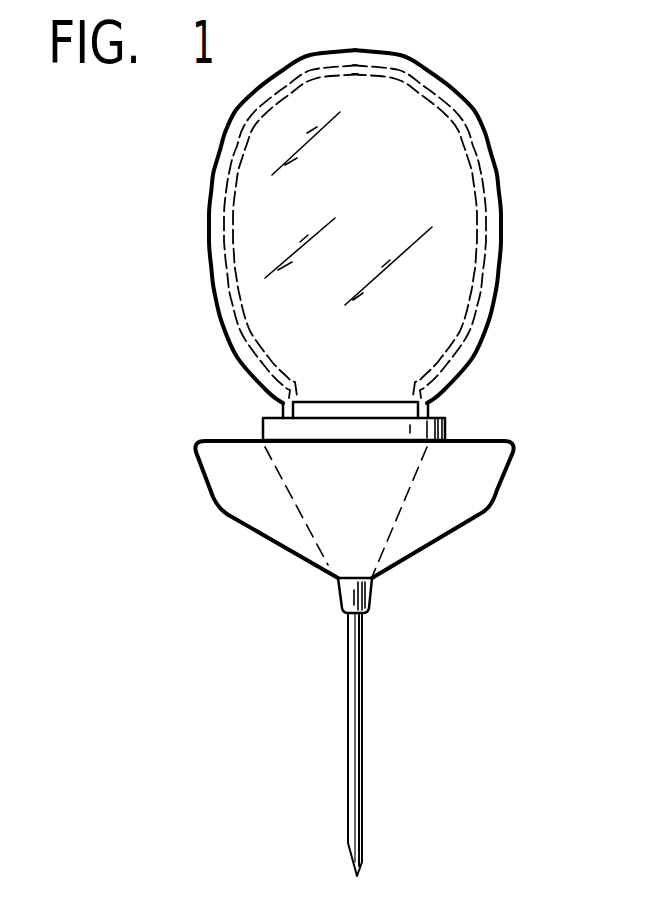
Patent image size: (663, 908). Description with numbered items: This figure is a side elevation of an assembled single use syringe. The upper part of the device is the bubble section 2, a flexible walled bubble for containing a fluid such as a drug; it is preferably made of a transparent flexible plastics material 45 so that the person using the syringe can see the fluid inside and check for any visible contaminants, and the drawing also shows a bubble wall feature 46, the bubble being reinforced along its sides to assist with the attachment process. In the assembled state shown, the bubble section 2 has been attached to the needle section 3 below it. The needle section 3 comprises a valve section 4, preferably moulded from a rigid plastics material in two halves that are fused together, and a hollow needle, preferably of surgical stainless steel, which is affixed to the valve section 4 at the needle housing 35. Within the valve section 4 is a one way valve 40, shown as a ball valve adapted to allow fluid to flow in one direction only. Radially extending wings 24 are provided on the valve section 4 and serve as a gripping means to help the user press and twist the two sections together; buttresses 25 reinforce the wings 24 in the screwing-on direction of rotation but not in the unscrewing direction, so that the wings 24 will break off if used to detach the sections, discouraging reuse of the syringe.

The bubble section 2 is at (356, 245).
The flexible plastics material 45 is at (450, 230).
The bulb wall 46 is at (490, 299).
The needle section 3 is at (369, 658).
The valve section 4 is at (325, 533).
The radially extending wings 24 is at (235, 495).
The buttresses 25 is at (478, 483).
The needle housing 35 is at (345, 602).
The one way valve 40 is at (348, 707).